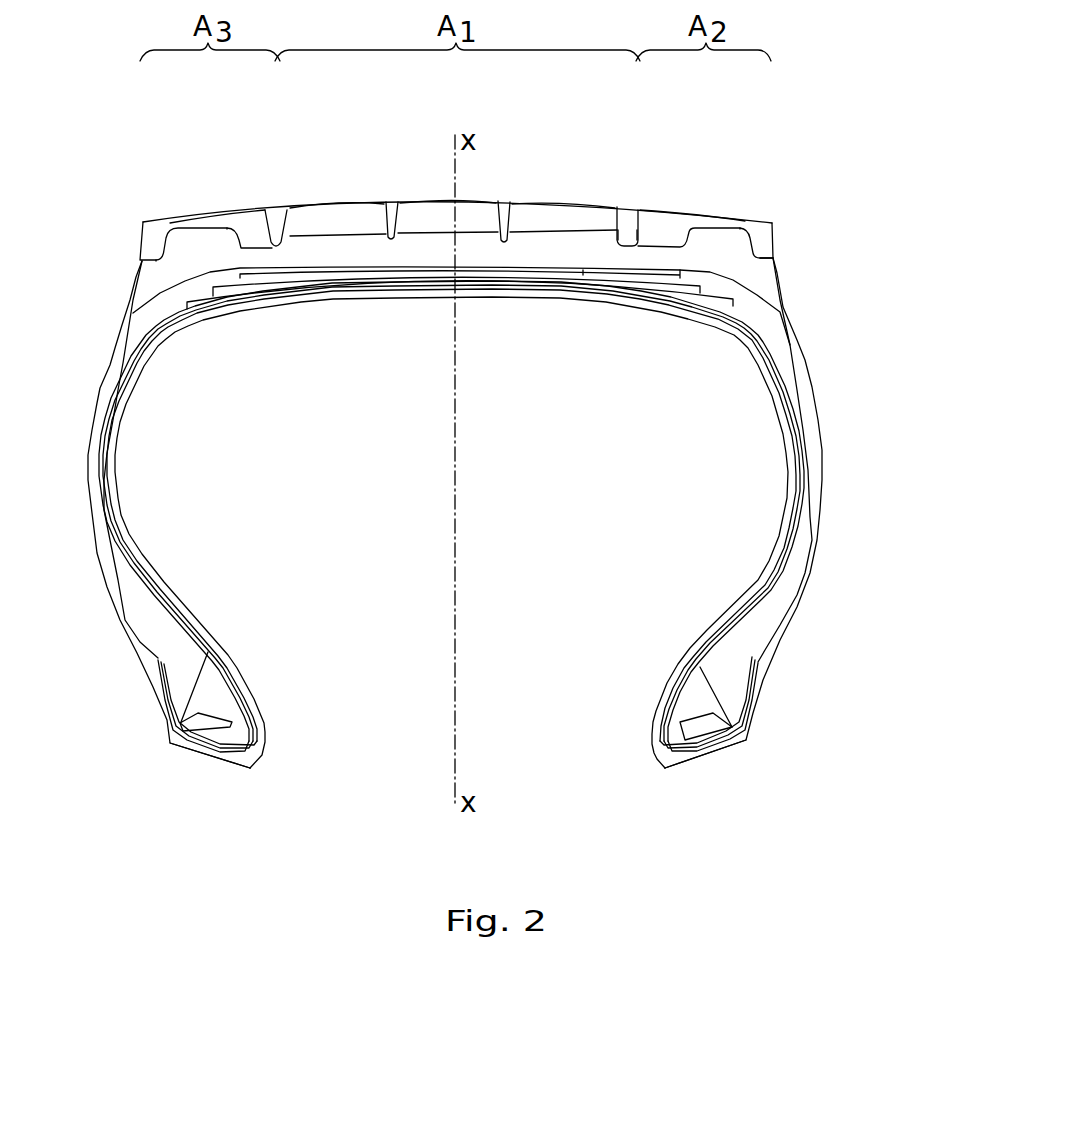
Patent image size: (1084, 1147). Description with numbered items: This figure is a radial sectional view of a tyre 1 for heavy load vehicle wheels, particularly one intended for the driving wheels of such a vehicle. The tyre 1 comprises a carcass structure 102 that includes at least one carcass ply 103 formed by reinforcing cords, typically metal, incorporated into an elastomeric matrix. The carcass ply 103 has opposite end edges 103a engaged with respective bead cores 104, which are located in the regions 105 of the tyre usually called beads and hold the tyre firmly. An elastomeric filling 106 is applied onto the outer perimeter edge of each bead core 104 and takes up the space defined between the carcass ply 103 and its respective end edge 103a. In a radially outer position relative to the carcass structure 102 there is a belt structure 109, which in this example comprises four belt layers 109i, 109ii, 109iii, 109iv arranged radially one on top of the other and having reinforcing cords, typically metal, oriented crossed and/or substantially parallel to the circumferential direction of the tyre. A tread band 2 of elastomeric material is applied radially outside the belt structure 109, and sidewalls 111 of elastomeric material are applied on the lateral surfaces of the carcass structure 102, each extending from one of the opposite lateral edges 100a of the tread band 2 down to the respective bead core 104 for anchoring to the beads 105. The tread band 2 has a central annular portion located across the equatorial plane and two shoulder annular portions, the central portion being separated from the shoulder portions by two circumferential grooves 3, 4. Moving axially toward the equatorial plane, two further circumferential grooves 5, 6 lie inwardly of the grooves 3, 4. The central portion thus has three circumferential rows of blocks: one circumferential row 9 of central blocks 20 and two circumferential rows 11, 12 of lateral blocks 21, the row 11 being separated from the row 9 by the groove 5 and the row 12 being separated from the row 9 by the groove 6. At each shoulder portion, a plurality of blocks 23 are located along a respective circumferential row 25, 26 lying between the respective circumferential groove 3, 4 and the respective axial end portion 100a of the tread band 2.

The tyre 1 is at (141, 160).
The tread band 2 is at (668, 190).
The circumferential groove 3 is at (284, 268).
The circumferential groove 4 is at (627, 268).
The circumferential groove 5 is at (390, 245).
The circumferential groove 6 is at (505, 262).
The circumferential row of central blocks 9 is at (485, 190).
The circumferential row of lateral blocks 11 is at (357, 190).
The circumferential row of lateral blocks 12 is at (553, 190).
The central block 20 is at (440, 213).
The lateral block 21 is at (317, 215).
The block 23 is at (236, 245).
The circumferential row 25 is at (188, 206).
The circumferential row 26 is at (772, 223).
The lateral edge of the tread band 100a is at (140, 272).
The carcass structure 102 is at (808, 386).
The carcass ply 103 is at (813, 457).
The end edge of the carcass ply 103a is at (753, 680).
The bead core 104 is at (708, 730).
The bead 105 is at (805, 675).
The elastomeric filling 106 is at (747, 633).
The belt structure 109 is at (745, 262).
The belt layer 109i is at (710, 280).
The belt layer 109ii is at (724, 274).
The belt layer 109iii is at (735, 300).
The belt layer 109iv is at (557, 268).
The sidewall 111 is at (812, 360).